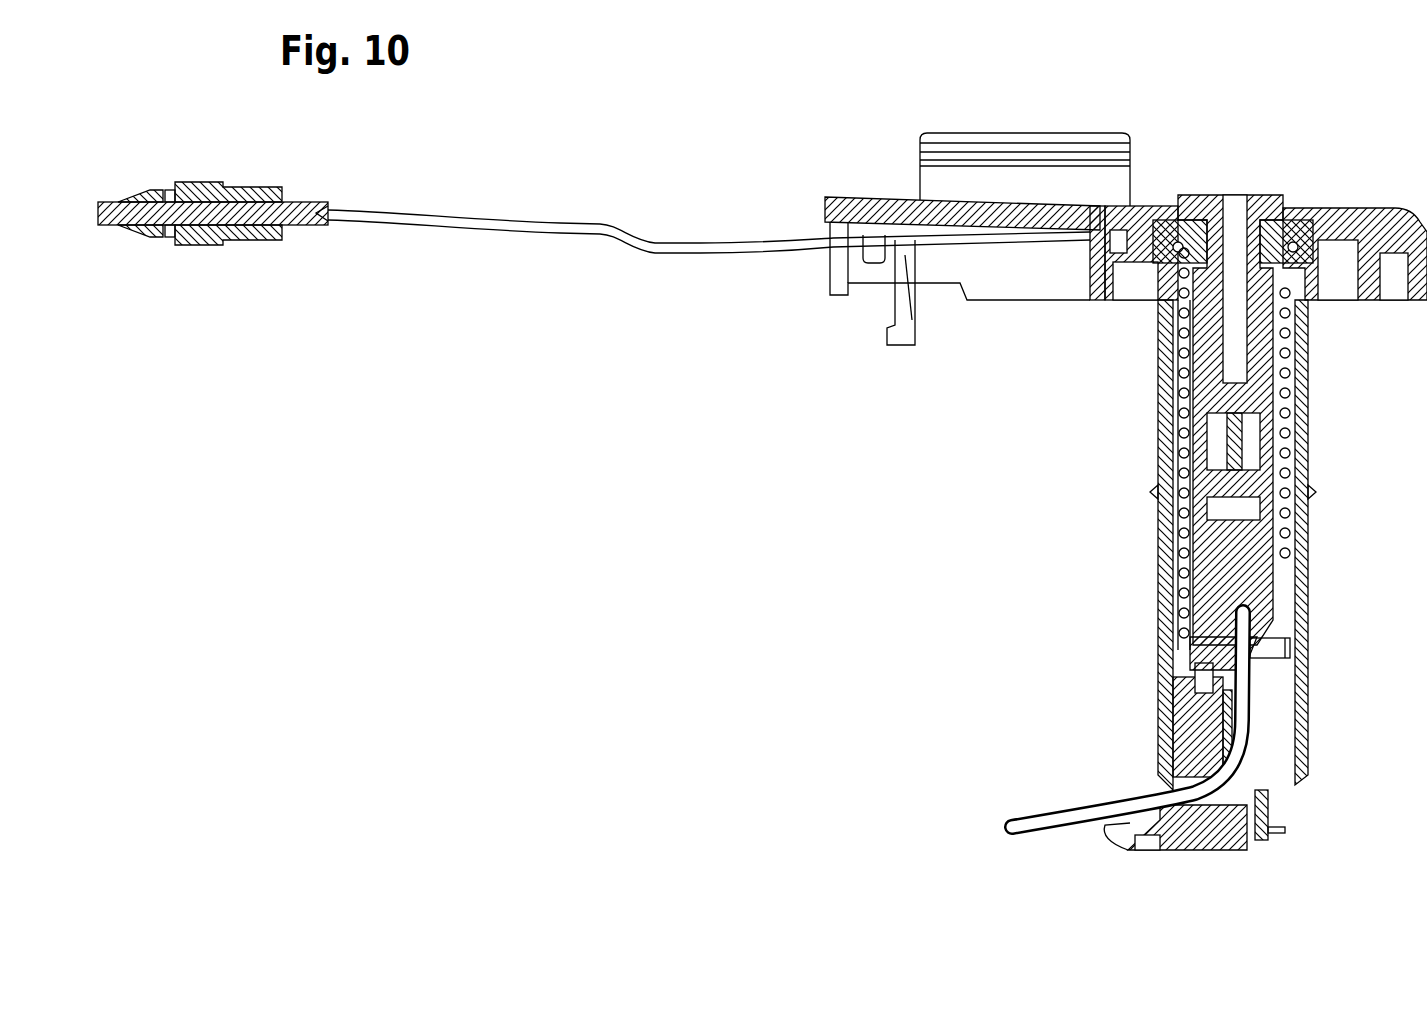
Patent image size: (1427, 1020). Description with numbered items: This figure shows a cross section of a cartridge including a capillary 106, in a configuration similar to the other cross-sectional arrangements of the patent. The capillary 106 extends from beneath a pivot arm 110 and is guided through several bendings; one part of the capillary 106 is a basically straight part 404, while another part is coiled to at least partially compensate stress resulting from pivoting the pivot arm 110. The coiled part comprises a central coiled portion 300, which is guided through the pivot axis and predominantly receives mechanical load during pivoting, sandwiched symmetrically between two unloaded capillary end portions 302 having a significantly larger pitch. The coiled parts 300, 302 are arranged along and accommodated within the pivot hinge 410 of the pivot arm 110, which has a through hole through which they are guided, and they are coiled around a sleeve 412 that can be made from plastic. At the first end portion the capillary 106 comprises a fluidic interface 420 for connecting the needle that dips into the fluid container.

The capillary 106 is at (1042, 798).
The pivot arm 110 is at (862, 172).
The coiled portion 300 is at (1182, 428).
The unloaded capillary end portions 302 is at (1300, 215).
The straight part 404 is at (757, 246).
The pivot hinge 410 is at (1285, 427).
The sleeve 412 is at (1200, 352).
The fluidic interface 420 is at (200, 240).